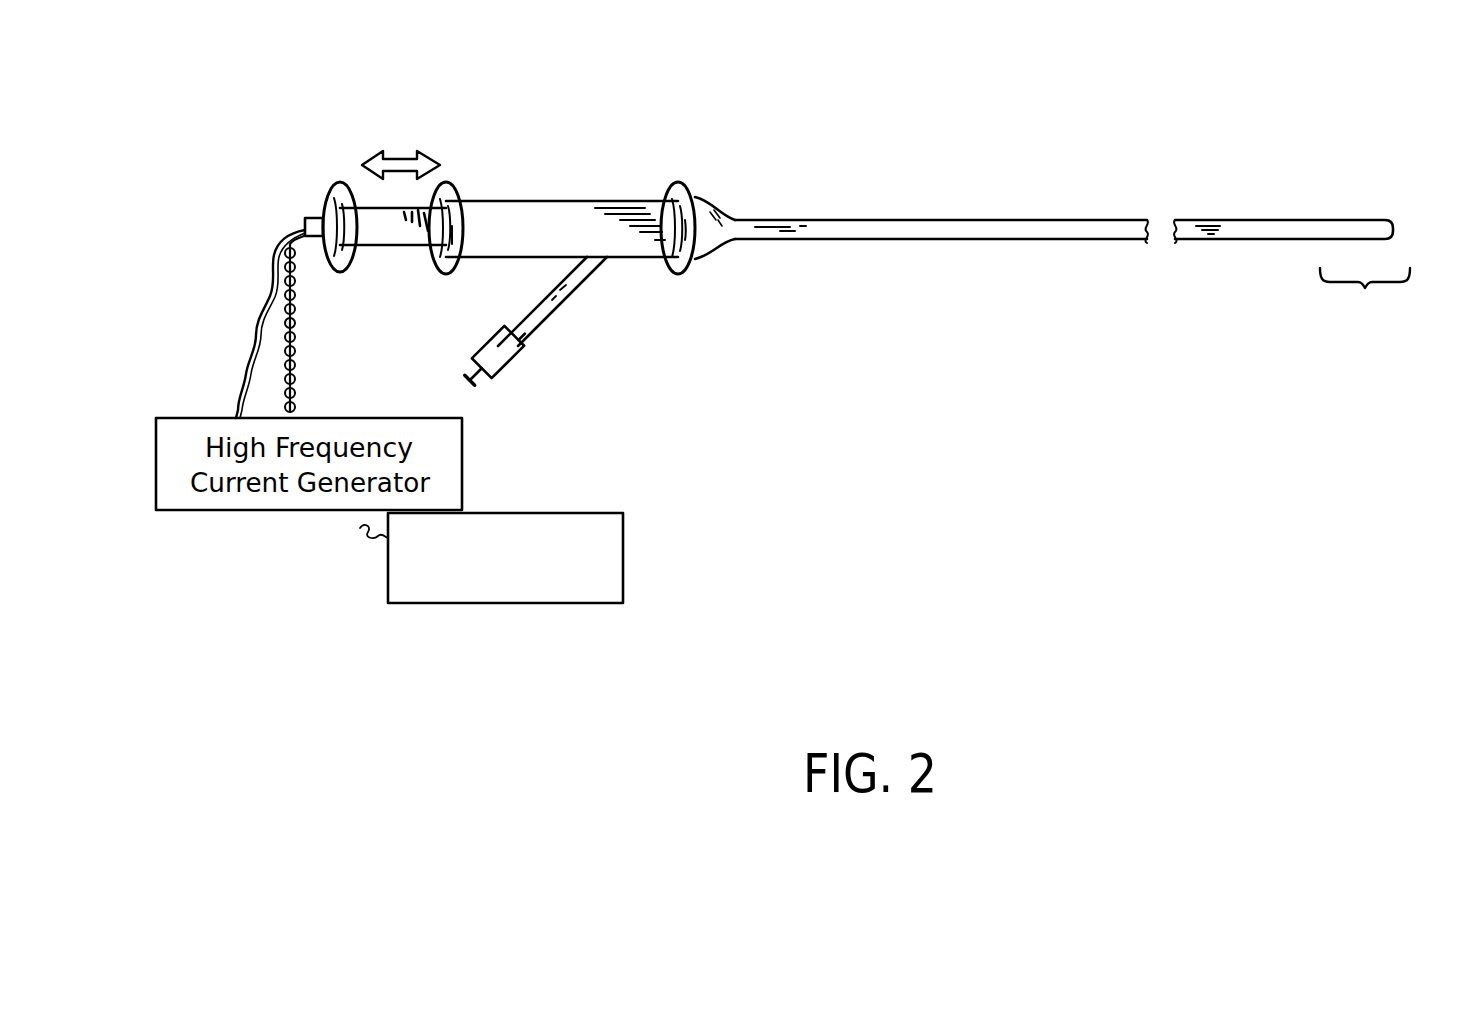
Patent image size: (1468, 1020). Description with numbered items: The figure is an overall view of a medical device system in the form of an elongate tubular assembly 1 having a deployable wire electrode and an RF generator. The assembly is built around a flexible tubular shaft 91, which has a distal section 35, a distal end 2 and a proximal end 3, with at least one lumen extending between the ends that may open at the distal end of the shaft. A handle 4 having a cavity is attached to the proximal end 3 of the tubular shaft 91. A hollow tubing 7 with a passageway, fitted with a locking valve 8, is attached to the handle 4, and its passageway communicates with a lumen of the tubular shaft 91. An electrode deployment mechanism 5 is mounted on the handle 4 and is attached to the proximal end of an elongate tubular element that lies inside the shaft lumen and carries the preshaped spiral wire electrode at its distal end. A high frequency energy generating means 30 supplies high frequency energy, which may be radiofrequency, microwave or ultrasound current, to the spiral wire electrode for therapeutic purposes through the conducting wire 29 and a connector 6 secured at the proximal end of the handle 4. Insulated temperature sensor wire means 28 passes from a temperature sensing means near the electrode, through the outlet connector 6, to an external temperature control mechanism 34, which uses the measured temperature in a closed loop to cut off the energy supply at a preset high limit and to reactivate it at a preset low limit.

The elongate tubular assembly 1 is at (905, 125).
The distal end 2 is at (1400, 217).
The proximal end 3 is at (732, 217).
The handle 4 is at (557, 193).
The electrode deployment mechanism 5 is at (383, 256).
The connector 6 is at (299, 215).
The hollow tubing 7 is at (555, 318).
The locking valve 8 is at (508, 386).
The insulated temperature sensor wire means 28 is at (300, 381).
The conducting wire 29 is at (254, 310).
The high frequency energy generating means 30 is at (310, 508).
The external temperature control mechanism 34 is at (623, 521).
The distal section 35 is at (1365, 298).
The flexible tubular shaft 91 is at (988, 217).